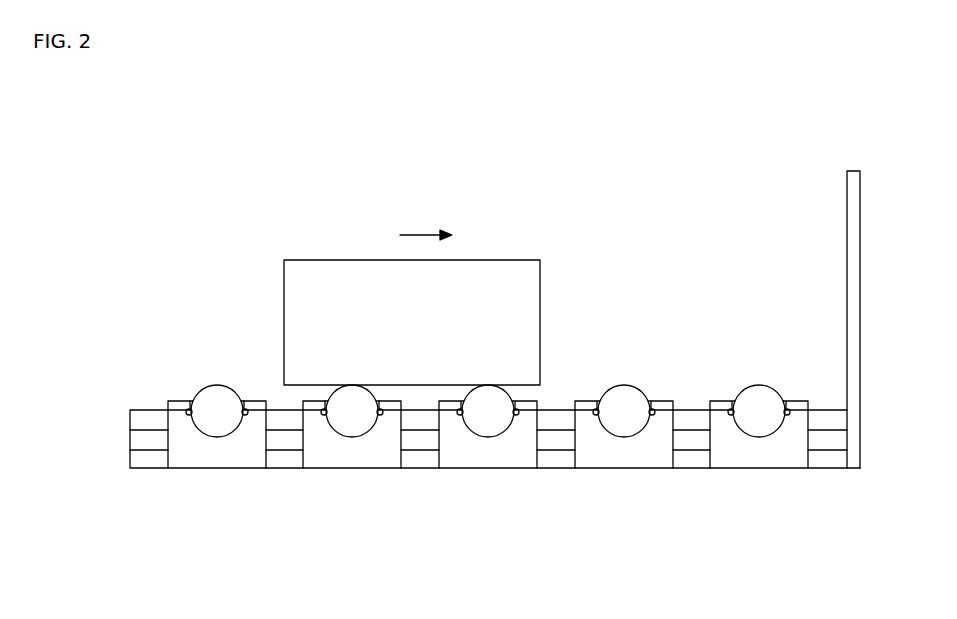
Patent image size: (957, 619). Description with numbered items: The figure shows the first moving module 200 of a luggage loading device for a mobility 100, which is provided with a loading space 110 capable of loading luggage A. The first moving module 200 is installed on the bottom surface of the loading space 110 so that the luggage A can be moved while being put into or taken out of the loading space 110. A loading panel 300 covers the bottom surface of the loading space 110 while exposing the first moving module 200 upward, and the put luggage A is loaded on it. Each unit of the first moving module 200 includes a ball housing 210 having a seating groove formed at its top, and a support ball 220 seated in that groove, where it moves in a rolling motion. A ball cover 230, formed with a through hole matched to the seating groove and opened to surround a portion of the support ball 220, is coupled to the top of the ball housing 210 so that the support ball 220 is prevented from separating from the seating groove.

The mobility 100 is at (851, 172).
The loading space 110 is at (722, 276).
The first moving module 200 is at (205, 389).
The ball housing 210 is at (376, 452).
The support ball 220 is at (342, 422).
The ball cover 230 is at (306, 398).
The loading panel 300 is at (425, 417).
The luggage A is at (333, 270).